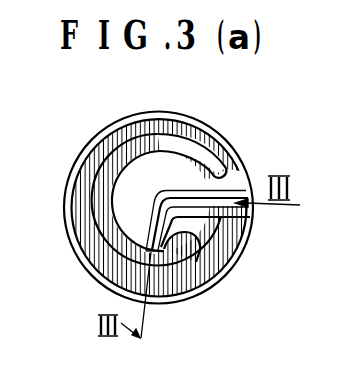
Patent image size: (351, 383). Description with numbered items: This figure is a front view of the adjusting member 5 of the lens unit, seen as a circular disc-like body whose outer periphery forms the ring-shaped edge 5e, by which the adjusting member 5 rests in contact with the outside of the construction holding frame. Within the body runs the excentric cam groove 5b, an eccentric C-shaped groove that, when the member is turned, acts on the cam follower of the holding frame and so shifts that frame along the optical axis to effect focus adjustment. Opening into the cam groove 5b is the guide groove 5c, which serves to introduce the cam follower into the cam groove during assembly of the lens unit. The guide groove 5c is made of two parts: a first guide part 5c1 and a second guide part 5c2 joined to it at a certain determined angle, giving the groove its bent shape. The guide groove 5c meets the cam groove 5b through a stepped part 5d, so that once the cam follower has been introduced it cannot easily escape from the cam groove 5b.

The adjusting member 5 is at (104, 148).
The excentric cam groove 5b is at (104, 237).
The guide groove 5c is at (250, 190).
The first guide part 5c1 is at (205, 190).
The second guide part 5c2 is at (154, 223).
The stepped part 5d is at (159, 252).
The ring-shaped edge 5e is at (228, 268).